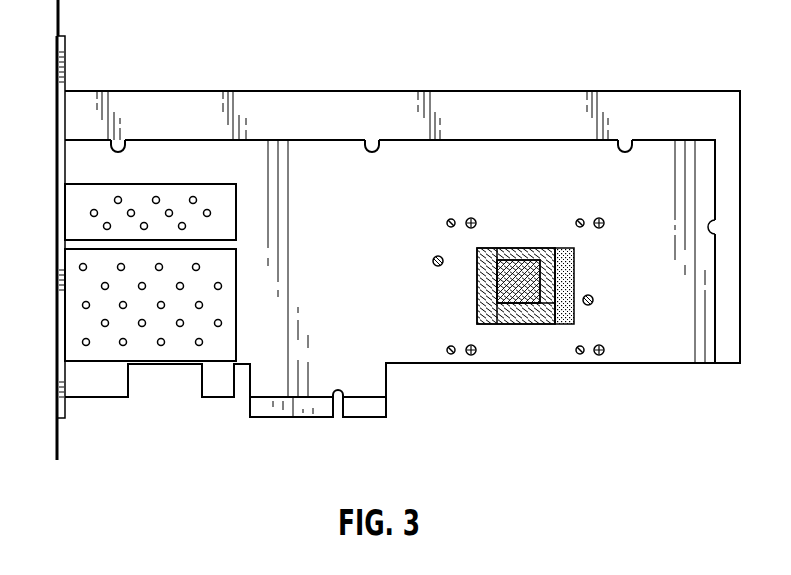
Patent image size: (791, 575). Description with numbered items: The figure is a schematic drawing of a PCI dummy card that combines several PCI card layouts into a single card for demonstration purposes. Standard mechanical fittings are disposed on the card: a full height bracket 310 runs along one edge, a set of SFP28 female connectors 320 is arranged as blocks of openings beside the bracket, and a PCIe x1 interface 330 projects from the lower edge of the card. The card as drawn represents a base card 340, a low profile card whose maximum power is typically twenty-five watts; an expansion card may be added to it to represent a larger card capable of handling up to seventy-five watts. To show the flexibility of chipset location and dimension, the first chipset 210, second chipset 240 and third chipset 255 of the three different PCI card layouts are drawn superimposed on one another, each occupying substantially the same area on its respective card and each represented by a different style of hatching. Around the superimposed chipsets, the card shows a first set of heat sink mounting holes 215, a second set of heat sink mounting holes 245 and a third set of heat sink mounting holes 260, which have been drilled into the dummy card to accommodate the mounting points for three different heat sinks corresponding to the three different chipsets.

The full height bracket 310 is at (66, 44).
The set of SFP28 female connectors 320 is at (178, 195).
The PCIe x1 interface 330 is at (320, 405).
The base card 340 is at (337, 170).
The third set of heat sink mounting holes 260 is at (449, 220).
The first set of heat sink mounting holes 215 is at (477, 219).
The second set of heat sink mounting holes 245 is at (434, 266).
The third chipset 255 is at (482, 298).
The second chipset 240 is at (523, 324).
The first chipset 210 is at (566, 280).